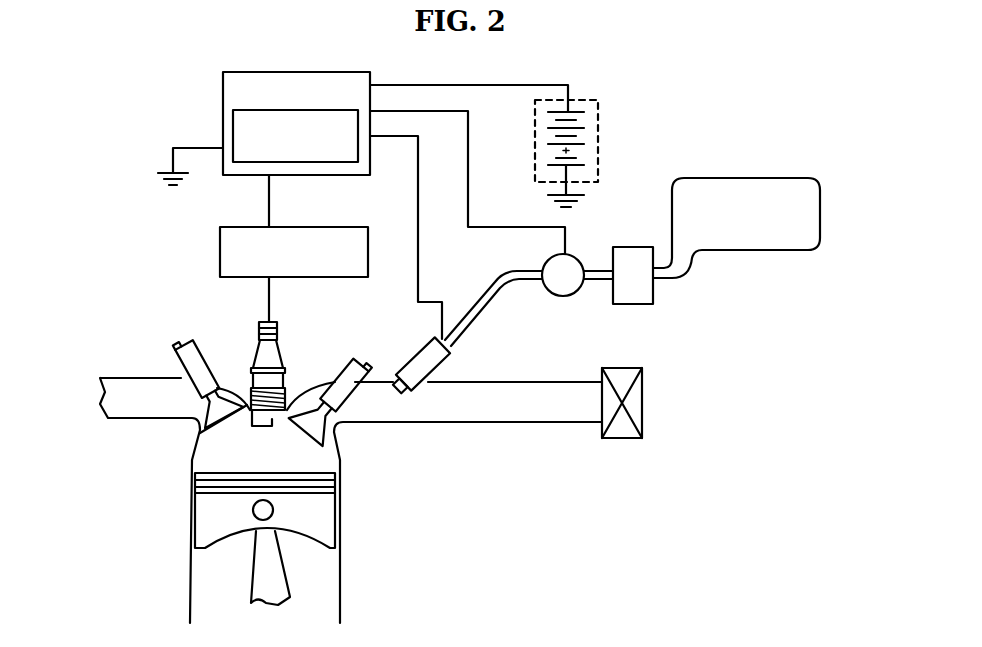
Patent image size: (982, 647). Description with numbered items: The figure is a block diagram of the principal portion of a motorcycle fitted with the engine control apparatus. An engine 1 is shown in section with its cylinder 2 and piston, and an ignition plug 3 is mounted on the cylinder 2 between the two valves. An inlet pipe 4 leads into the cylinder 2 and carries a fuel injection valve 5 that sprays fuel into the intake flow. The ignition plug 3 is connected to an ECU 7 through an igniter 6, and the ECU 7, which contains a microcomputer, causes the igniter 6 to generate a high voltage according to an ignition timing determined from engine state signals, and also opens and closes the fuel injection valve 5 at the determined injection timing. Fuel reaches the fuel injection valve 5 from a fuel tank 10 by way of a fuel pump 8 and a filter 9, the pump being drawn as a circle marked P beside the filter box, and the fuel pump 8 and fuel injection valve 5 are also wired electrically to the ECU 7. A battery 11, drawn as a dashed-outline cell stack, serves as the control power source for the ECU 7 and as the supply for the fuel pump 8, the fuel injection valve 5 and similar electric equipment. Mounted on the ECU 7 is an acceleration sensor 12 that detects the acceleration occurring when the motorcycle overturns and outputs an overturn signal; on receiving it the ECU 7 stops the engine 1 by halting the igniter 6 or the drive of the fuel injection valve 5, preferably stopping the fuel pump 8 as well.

The engine 1 is at (371, 472).
The cylinder 2 is at (340, 468).
The ignition plug 3 is at (272, 358).
The inlet pipe 4 is at (373, 391).
The fuel injection valve 5 is at (448, 356).
The igniter 6 is at (220, 240).
The ECU 7 is at (223, 92).
The fuel pump 8 is at (567, 296).
The filter 9 is at (640, 304).
The fuel tank 10 is at (762, 250).
The battery 11 is at (598, 130).
The acceleration sensor 12 is at (308, 162).